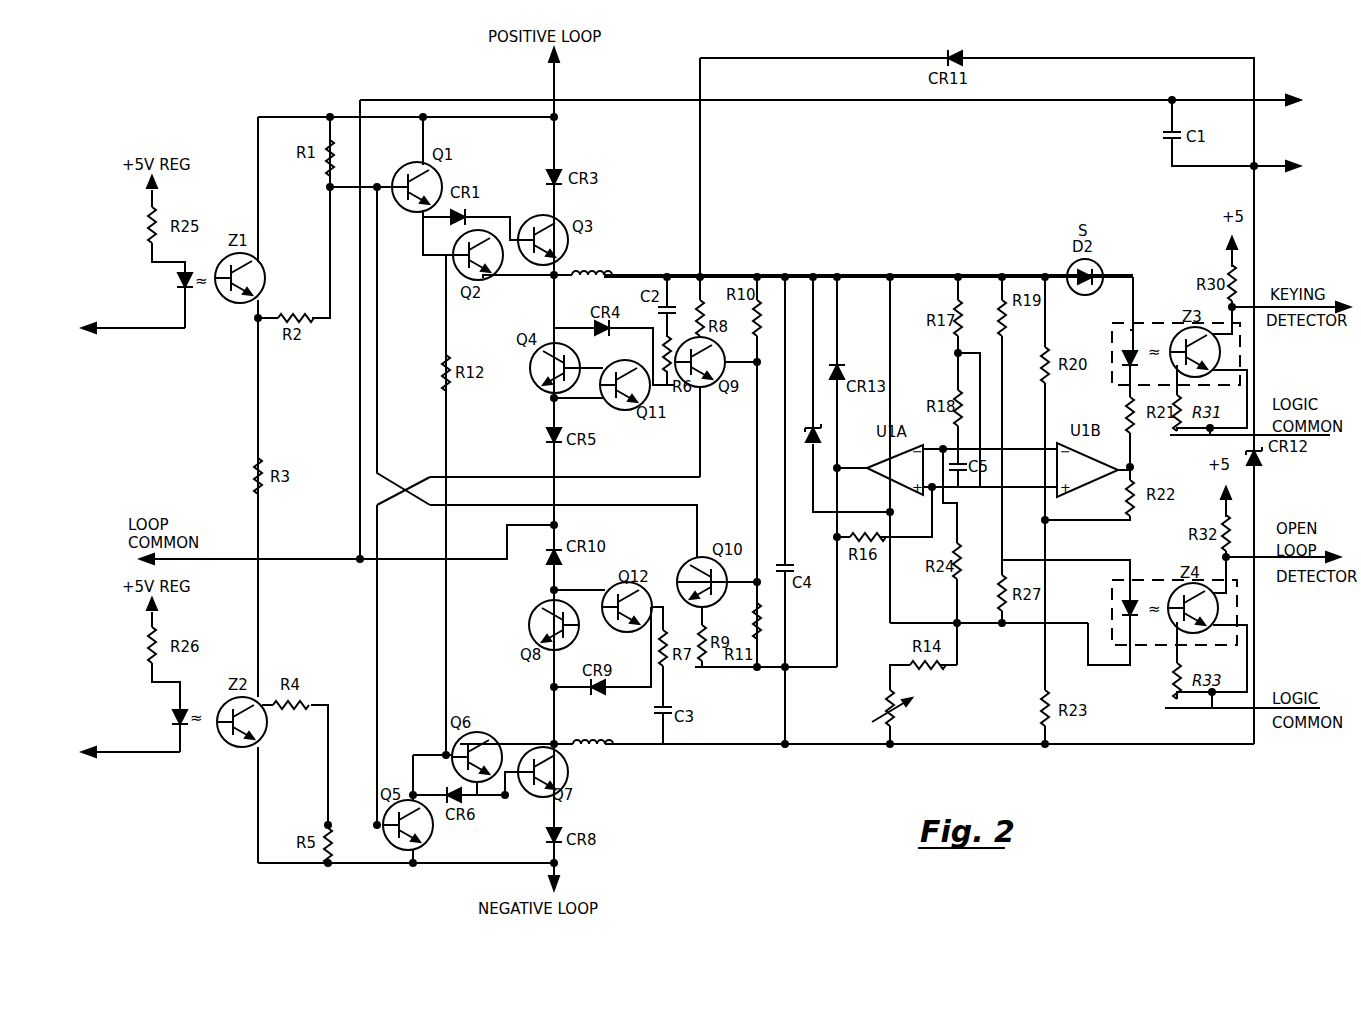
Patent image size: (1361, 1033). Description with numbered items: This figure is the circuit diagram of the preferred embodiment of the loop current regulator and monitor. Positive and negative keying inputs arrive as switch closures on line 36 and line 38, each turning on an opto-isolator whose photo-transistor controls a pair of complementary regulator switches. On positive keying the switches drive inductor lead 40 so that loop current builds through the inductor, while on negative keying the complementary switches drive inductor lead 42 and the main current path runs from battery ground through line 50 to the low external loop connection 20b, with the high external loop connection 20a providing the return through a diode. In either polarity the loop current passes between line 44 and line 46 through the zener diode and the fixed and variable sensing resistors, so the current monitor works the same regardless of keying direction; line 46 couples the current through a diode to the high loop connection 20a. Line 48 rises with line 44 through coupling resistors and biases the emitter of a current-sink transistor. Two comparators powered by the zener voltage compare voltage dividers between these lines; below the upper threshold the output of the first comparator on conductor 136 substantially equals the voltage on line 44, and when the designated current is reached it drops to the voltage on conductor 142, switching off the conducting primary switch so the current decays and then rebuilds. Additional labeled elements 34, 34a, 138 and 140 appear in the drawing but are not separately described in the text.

The high external loop connection 20a is at (1274, 166).
The low external loop connection 20b is at (1274, 100).
The zener voltage reference VR1 34 is at (818, 350).
The adjustable resistor R15 34a is at (893, 738).
The positive keying input line 36 is at (127, 328).
The negative keying input line 38 is at (121, 751).
The inductor lead 40 is at (556, 272).
The inductor lead 42 is at (566, 757).
The current monitor line 44 is at (830, 276).
The current monitor return line 46 is at (813, 746).
The current source bias line 48 is at (836, 612).
The battery ground line 50 is at (835, 102).
The comparator output conductor 136 is at (842, 465).
The cross-coupling line 138 is at (610, 476).
The cross-coupling line 140 is at (682, 505).
The reference conductor 142 is at (903, 622).